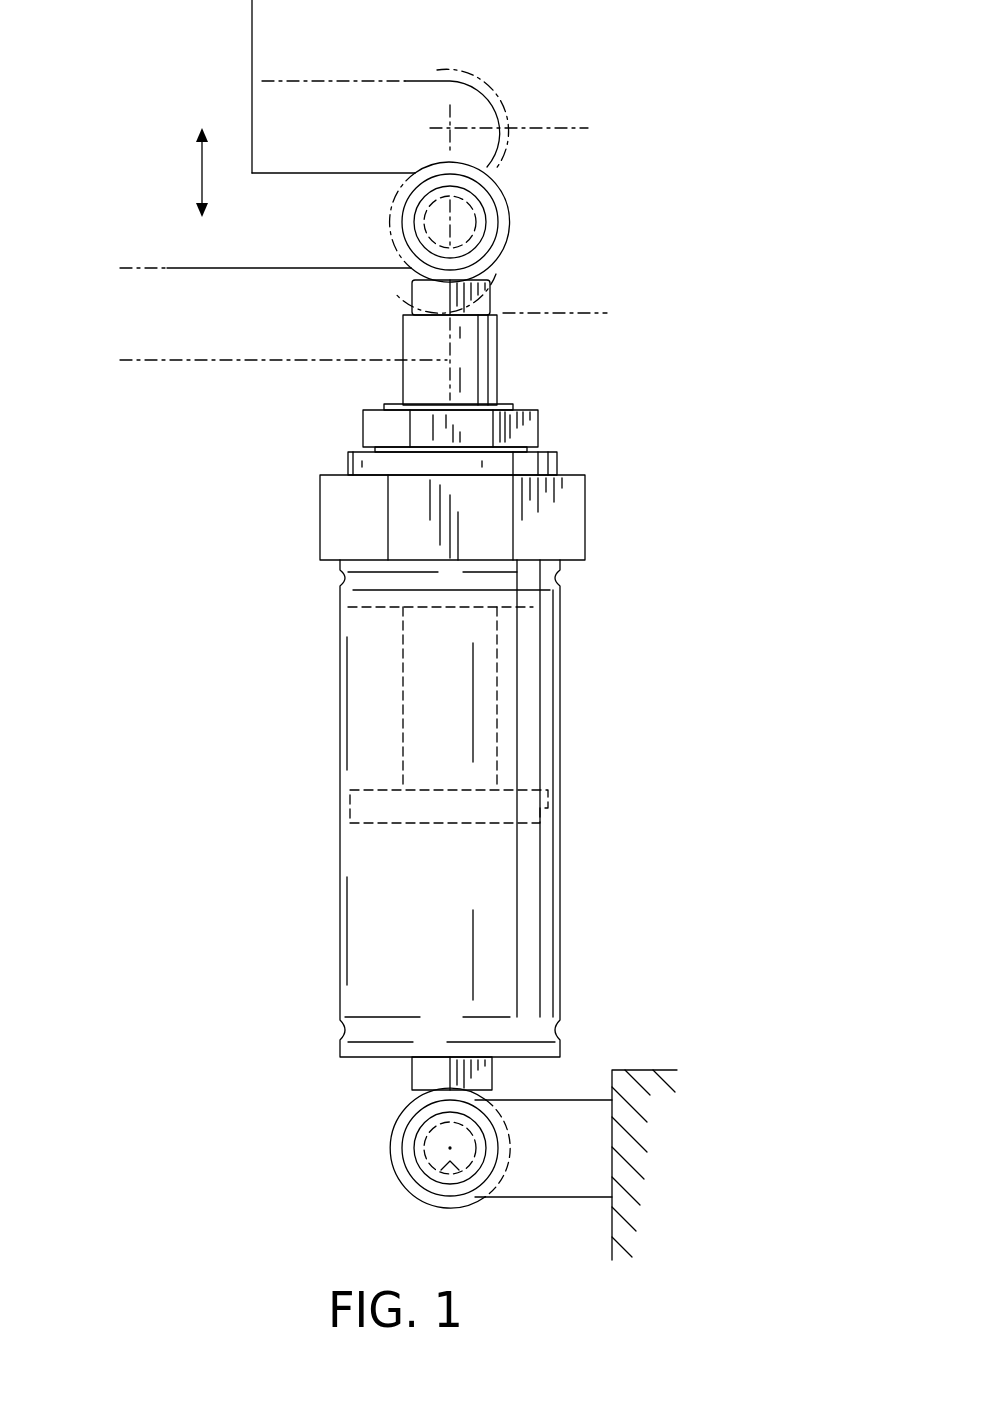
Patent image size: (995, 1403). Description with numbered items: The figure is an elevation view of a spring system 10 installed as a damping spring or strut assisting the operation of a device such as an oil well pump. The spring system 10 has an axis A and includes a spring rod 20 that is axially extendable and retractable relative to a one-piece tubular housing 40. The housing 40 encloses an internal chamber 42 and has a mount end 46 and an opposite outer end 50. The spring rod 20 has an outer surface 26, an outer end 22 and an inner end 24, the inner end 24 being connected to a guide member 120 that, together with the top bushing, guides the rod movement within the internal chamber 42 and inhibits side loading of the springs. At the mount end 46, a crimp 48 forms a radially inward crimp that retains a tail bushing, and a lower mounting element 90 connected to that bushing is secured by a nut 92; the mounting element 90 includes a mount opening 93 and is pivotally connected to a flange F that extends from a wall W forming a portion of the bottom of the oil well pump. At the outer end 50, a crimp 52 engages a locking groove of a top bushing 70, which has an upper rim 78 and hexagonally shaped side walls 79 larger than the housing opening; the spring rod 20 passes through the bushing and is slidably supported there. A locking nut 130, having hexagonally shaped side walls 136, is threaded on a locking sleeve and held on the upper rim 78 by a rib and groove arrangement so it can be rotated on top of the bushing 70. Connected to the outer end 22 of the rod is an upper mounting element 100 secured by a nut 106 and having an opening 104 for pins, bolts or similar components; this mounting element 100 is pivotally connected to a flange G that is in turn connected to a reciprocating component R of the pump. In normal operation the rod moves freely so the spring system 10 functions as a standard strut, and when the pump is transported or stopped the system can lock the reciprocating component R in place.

The spring system 10 is at (180, 585).
The spring rod 20 is at (515, 360).
The outer end 22 is at (492, 332).
The inner end 24 is at (413, 772).
The outer surface 26 is at (402, 387).
The tubular housing 40 is at (443, 808).
The internal chamber 42 is at (527, 903).
The mount end 46 is at (340, 1007).
The crimp 48 is at (557, 1030).
The outer end 50 is at (342, 597).
The crimp 52 is at (557, 580).
The top bushing 70 is at (470, 517).
The upper rim 78 is at (348, 462).
The hexagonally shaped side walls 79 is at (335, 509).
The mounting element 90 is at (398, 1175).
The nut 92 is at (427, 1072).
The mount opening 93 is at (437, 1173).
The mounting element 100 is at (456, 217).
The opening 104 is at (605, 228).
The nut 106 is at (497, 277).
The guide member 120 is at (553, 807).
The locking nut 130 is at (546, 431).
The hexagonally shaped side walls 136 is at (372, 426).
The reciprocating component R is at (243, 40).
The flange G is at (318, 185).
The axis A is at (450, 333).
The flange F is at (540, 1183).
The wall W is at (612, 1230).